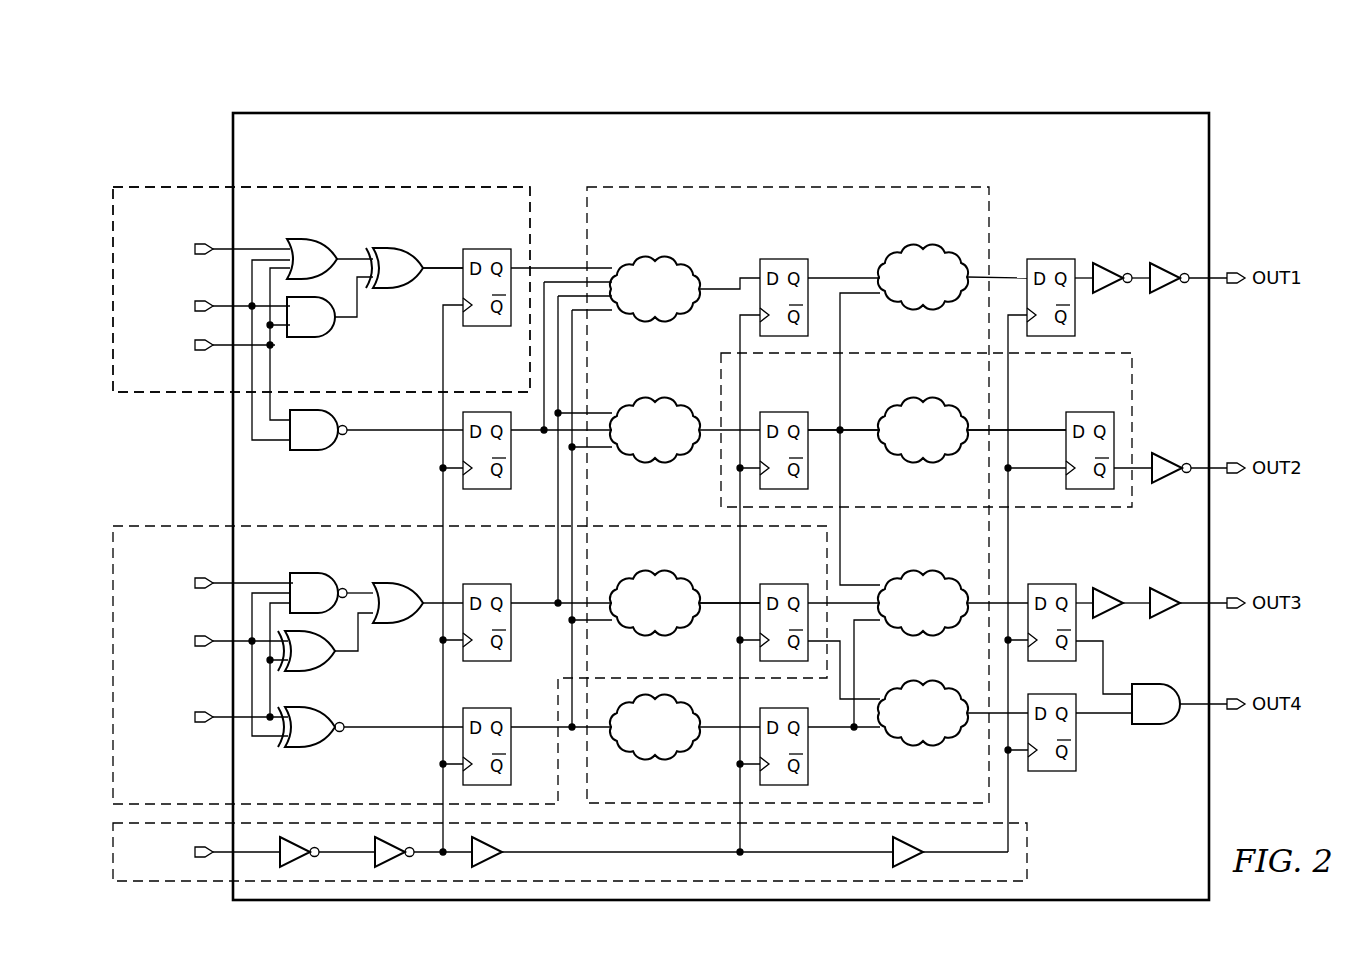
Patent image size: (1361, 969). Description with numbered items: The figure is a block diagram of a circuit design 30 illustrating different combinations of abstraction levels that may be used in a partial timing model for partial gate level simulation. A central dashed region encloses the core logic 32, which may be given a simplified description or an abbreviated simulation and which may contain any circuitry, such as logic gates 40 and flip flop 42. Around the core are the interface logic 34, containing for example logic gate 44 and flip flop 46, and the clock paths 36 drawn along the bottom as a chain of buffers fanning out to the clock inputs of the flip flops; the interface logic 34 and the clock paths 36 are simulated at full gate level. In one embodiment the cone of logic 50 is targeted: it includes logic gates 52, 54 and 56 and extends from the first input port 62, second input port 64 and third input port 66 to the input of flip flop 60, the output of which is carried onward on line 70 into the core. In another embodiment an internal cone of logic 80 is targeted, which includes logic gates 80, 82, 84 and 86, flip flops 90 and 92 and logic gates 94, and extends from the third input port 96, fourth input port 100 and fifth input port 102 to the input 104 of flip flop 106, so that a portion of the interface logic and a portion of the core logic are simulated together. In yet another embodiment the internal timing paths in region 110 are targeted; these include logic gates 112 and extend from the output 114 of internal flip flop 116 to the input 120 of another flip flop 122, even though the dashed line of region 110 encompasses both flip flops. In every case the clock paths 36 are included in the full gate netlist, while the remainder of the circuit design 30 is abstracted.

The circuit design 30 is at (1215, 150).
The core logic 32 is at (823, 185).
The interface logic 34 is at (440, 180).
The clock paths 36 is at (1032, 860).
The logic gates 40 is at (685, 288).
The flip flop 42 is at (784, 259).
The logic gate 44 is at (318, 452).
The flip flop 46 is at (500, 489).
The cone of logic 50 is at (153, 185).
The logic gate 52 is at (325, 240).
The logic gate 54 is at (403, 287).
The logic gate 56 is at (315, 338).
The flip flop 60 is at (487, 249).
The input port IN1 62 is at (200, 244).
The input port IN2 64 is at (200, 300).
The input port IN3 66 is at (200, 352).
The signal node 70 is at (438, 265).
The internal cone of logic 80 is at (153, 523).
The logic gate 82 is at (410, 585).
The logic gate 84 is at (332, 668).
The logic gate 86 is at (325, 748).
The flip flop 90 is at (487, 584).
The flip flop 92 is at (492, 708).
The logic gates 94 is at (685, 602).
The input port IN3 96 is at (200, 578).
The input port IN4 100 is at (200, 648).
The input port IN5 102 is at (200, 724).
The input of flip flop 104 is at (722, 601).
The flip flop 106 is at (784, 584).
The internal timing paths region 110 is at (1088, 510).
The logic gates 112 is at (972, 429).
The output of internal flip flop 114 is at (850, 428).
The internal flip flop 116 is at (784, 412).
The input of flip flop 120 is at (1030, 428).
The flip flop 122 is at (1090, 412).